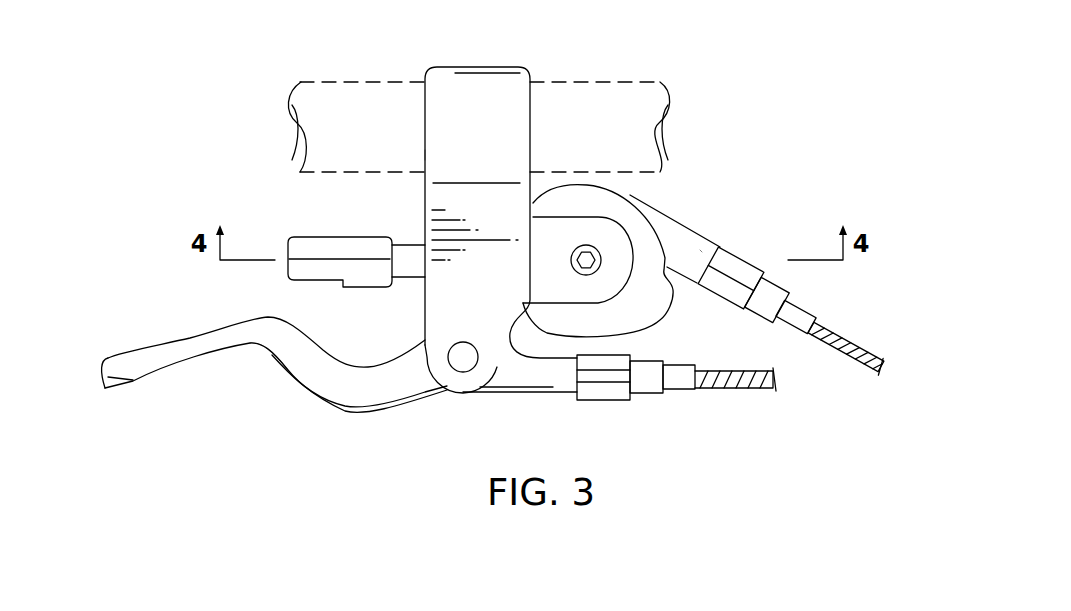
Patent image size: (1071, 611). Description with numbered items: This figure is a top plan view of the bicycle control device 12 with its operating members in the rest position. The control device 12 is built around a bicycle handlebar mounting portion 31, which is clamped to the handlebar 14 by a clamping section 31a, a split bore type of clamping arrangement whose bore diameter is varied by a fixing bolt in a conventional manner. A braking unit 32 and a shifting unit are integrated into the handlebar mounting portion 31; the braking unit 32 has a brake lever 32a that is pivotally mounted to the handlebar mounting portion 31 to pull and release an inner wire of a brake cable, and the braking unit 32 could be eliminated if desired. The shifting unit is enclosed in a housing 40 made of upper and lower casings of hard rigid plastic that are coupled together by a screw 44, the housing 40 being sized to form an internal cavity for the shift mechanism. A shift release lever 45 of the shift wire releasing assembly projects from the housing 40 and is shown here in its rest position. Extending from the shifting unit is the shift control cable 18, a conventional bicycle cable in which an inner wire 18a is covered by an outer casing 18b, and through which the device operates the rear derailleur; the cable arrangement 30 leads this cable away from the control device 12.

The bicycle control device 12 is at (746, 146).
The handlebar 14 is at (618, 82).
The shift control cable 18 is at (849, 323).
The inner wire 18a is at (852, 342).
The outer casing 18b is at (803, 303).
The cable connecting structure 30 is at (659, 191).
The bicycle handlebar mounting portion 31 is at (455, 60).
The clamping section 31a is at (425, 152).
The braking unit 32 is at (449, 400).
The brake lever 32a is at (292, 372).
The housing 40 is at (676, 237).
The screw 44 is at (587, 268).
The shift release lever 45 is at (333, 236).